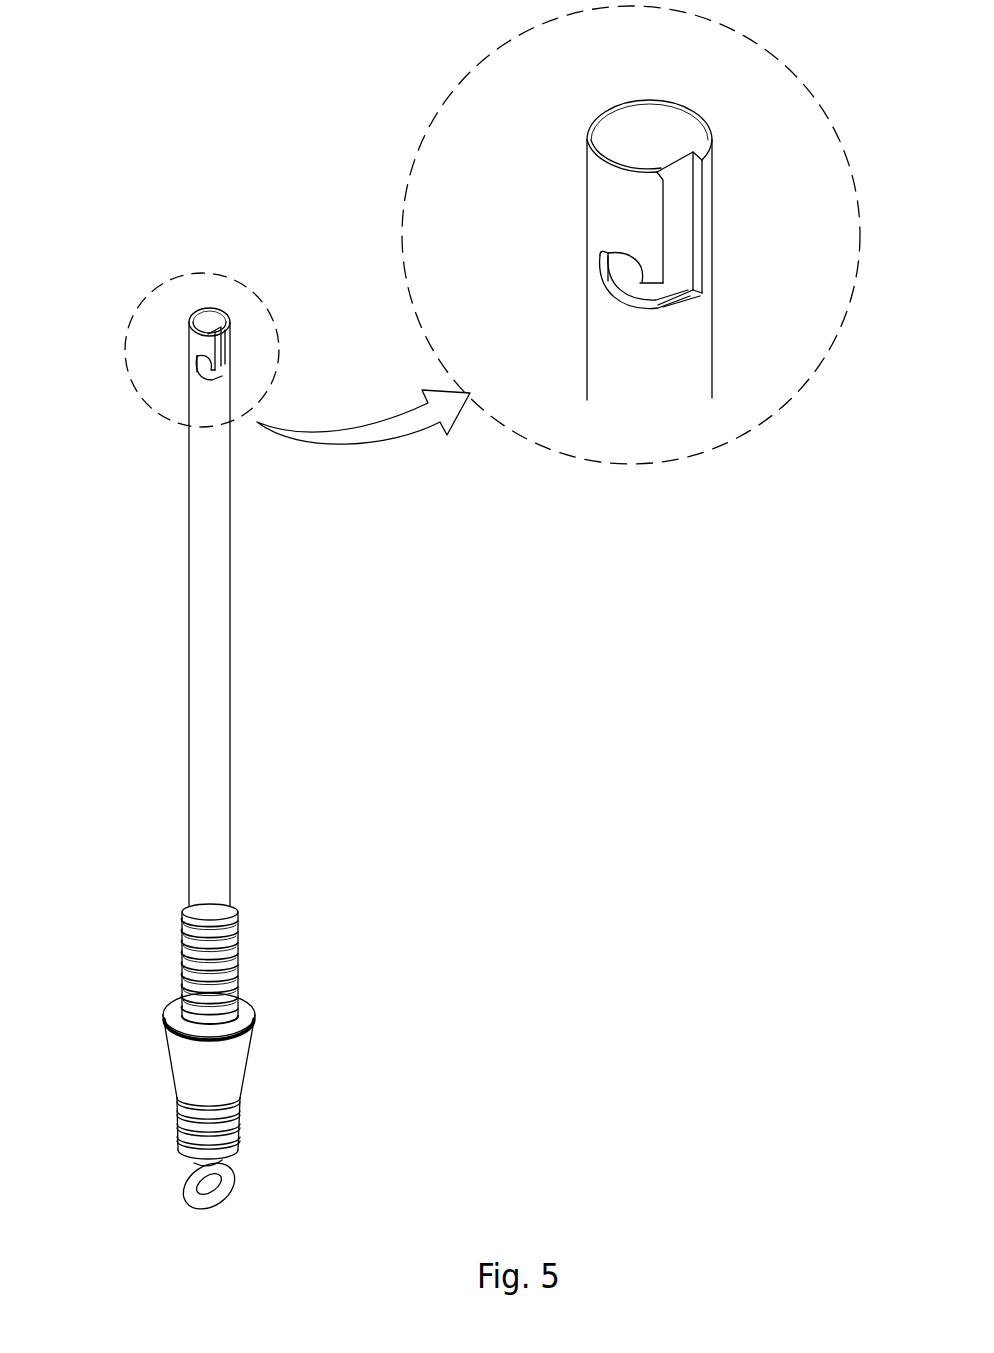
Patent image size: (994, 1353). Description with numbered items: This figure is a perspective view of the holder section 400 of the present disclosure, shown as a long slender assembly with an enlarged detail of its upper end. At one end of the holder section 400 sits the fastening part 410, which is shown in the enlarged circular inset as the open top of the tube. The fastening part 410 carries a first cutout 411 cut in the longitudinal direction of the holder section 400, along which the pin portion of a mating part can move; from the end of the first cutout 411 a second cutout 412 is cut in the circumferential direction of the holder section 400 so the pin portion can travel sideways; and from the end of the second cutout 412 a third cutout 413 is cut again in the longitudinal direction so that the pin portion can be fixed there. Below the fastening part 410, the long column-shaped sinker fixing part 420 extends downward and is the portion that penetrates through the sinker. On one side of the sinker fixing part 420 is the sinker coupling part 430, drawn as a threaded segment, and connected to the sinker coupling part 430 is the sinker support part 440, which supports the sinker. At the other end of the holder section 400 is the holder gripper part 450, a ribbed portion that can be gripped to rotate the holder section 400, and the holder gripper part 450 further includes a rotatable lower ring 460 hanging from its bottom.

The holder section 400 is at (138, 662).
The fastening part 410 is at (635, 402).
The first cutout 411 is at (682, 193).
The second cutout 412 is at (653, 298).
The third cutout 413 is at (618, 280).
The sinker fixing part 420 is at (217, 597).
The sinker coupling part 430 is at (238, 949).
The sinker support part 440 is at (228, 1062).
The holder gripper part 450 is at (232, 1118).
The lower ring 460 is at (212, 1200).